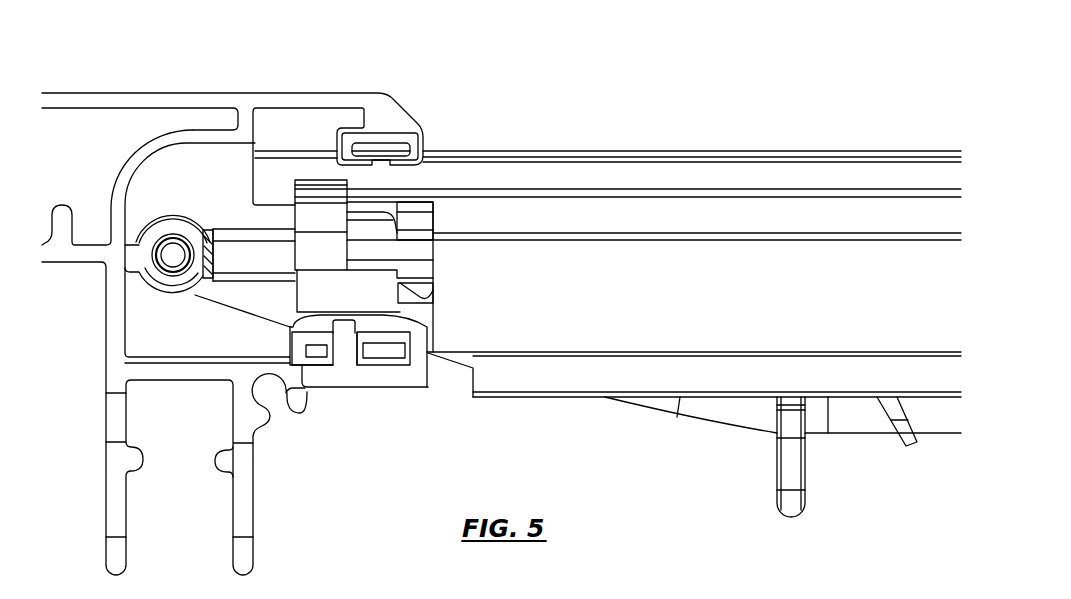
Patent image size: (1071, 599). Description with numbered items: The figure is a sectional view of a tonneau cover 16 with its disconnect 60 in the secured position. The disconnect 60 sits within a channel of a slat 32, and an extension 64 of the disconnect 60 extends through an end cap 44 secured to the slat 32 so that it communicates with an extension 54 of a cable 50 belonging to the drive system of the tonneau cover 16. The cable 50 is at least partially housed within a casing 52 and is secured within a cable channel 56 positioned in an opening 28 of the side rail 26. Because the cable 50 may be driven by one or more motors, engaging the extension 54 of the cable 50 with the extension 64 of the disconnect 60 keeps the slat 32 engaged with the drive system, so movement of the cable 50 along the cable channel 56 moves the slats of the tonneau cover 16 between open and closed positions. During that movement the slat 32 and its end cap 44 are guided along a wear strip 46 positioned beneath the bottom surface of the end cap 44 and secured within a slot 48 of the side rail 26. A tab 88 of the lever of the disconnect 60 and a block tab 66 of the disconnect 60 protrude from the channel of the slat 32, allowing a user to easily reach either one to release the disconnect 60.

The tonneau cover 16 is at (838, 110).
The side rail 26 is at (120, 98).
The opening 28 is at (212, 169).
The slat 32 is at (603, 293).
The end cap 44 is at (322, 208).
The wear strip 46 is at (368, 325).
The slot 48 is at (345, 358).
The cable 50 is at (178, 258).
The casing 52 is at (167, 240).
The extension of the cable 54 is at (205, 245).
The cable channel 56 is at (165, 299).
The disconnect 60 is at (819, 476).
The extension of the disconnect 64 is at (252, 258).
The block tab 66 is at (908, 437).
The tab of the lever 88 is at (792, 463).